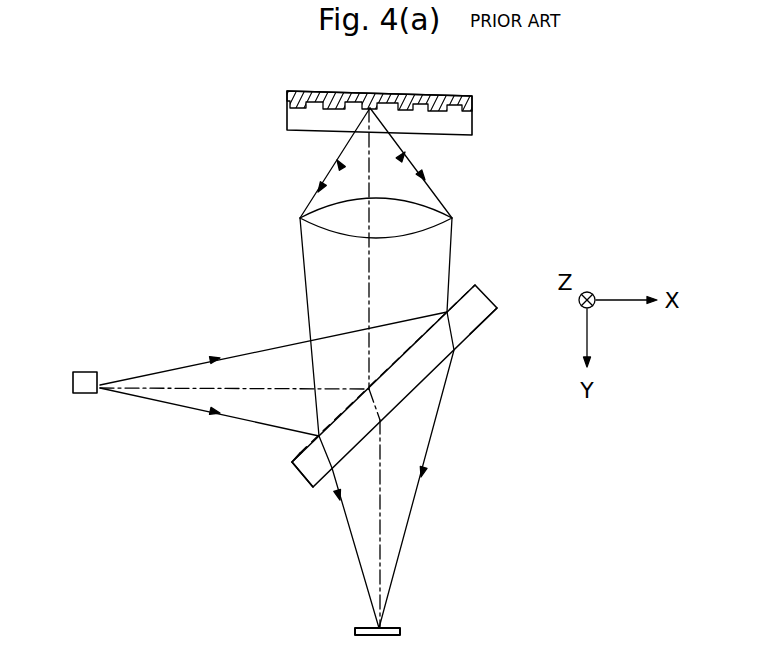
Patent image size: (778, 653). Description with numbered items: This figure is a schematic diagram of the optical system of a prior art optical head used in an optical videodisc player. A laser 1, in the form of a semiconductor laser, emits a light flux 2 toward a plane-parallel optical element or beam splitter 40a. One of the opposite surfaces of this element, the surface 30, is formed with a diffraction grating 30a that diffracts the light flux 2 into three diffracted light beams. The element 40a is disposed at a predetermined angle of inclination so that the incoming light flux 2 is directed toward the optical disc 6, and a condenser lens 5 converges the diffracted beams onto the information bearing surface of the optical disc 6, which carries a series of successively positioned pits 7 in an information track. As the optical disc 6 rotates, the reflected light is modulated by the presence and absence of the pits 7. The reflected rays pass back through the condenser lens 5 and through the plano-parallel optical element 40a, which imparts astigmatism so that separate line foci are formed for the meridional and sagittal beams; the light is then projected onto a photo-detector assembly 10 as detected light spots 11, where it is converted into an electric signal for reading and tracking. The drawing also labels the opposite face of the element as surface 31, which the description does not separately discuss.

The laser 1 is at (90, 395).
The light flux 2 is at (185, 407).
The condenser lens 5 is at (320, 218).
The optical disc 6 is at (273, 90).
The pits 7 is at (388, 92).
The photo-detector assembly 10 is at (402, 633).
The detected light spots 11 is at (388, 625).
The surface 30 is at (463, 288).
The diffraction grating 30a is at (300, 447).
The second surface of beam splitter plate 31 is at (488, 323).
The plano-parallel optical element 40a is at (306, 470).